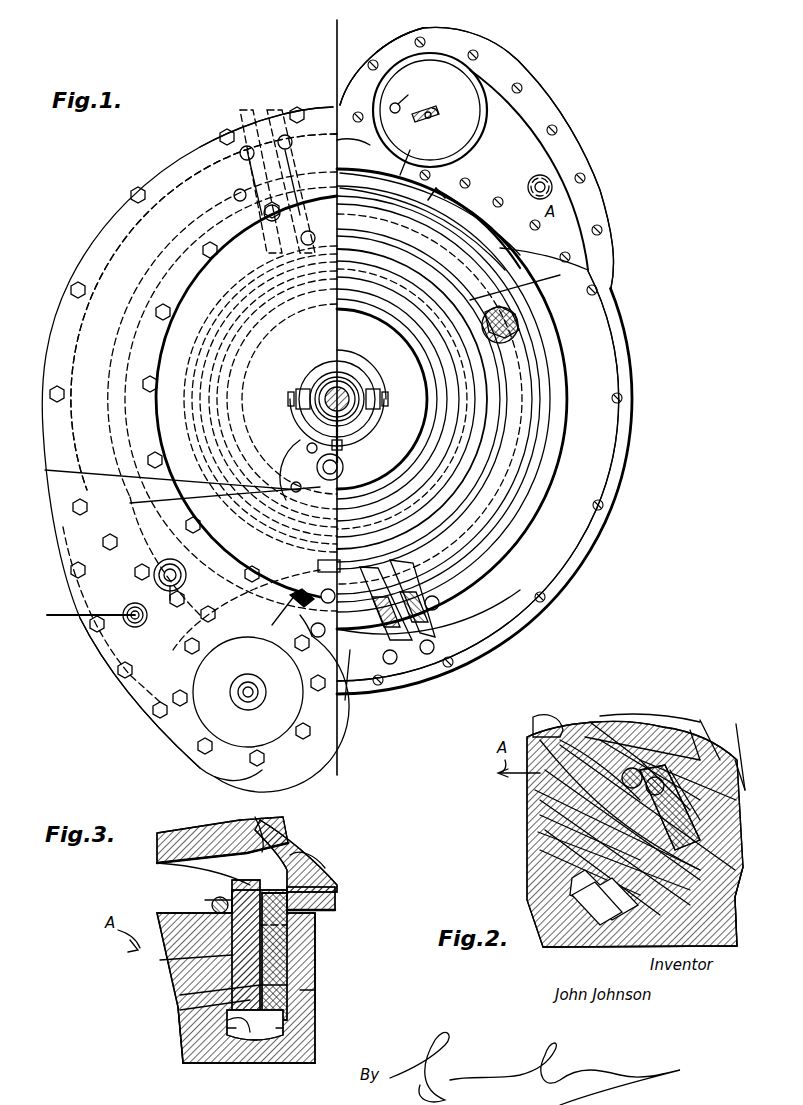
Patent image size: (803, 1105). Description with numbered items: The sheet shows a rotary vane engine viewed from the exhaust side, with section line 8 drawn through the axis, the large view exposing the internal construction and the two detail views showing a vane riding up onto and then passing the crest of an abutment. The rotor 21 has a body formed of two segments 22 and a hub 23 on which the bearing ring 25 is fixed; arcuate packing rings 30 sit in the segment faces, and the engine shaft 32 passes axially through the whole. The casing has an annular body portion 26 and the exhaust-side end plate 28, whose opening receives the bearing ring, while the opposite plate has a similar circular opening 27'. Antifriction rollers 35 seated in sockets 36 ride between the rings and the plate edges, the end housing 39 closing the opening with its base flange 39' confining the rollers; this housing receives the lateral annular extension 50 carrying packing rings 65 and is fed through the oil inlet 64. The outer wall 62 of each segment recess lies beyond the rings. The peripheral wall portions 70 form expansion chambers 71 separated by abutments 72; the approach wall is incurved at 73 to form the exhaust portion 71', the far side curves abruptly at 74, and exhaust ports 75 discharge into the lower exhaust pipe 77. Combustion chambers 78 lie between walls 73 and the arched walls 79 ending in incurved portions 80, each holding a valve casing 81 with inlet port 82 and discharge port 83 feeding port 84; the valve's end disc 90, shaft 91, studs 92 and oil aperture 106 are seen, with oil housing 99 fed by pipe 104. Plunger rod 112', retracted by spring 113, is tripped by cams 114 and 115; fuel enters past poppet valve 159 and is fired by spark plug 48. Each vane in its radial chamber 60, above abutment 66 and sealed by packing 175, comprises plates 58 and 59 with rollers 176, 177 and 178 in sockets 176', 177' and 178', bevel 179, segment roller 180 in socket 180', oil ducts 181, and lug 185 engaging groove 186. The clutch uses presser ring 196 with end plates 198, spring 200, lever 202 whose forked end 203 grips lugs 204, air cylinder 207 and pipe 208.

In FIG. 1, the section line 8 is at (334, 30).
In FIG. 1, the rotor 21 is at (572, 392).
In FIG. 1, the body segment 22 is at (566, 503).
In FIG. 2, the body segment 22 is at (528, 787).
In FIG. 3, the body segment 22 is at (315, 942).
In FIG. 1, the hub 23 is at (345, 312).
In FIG. 3, the hub 23 is at (180, 1060).
In FIG. 1, the bearing ring 25 is at (486, 412).
In FIG. 1, the annular body portion 26 is at (642, 449).
In FIG. 1, the circular opening 27' is at (510, 476).
In FIG. 1, the end plate 28 is at (88, 262).
In FIG. 1, the arcuate packing ring 30 is at (520, 462).
In FIG. 1, the engine shaft 32 is at (330, 385).
In FIG. 1, the antifriction roller 35 is at (518, 330).
In FIG. 1, the socket 36 is at (150, 400).
In FIG. 1, the end housing 39 is at (209, 396).
In FIG. 1, the base flange 39' is at (212, 399).
In FIG. 1, the spark plug 48 is at (125, 625).
In FIG. 1, the lateral annular extension 50 is at (505, 440).
In FIG. 1, the forward vane plate 58 is at (420, 660).
In FIG. 2, the forward vane plate 58 is at (600, 858).
In FIG. 3, the forward vane plate 58 is at (232, 965).
In FIG. 1, the follower vane plate 59 is at (355, 699).
In FIG. 2, the follower vane plate 59 is at (724, 927).
In FIG. 3, the follower vane plate 59 is at (310, 960).
In FIG. 2, the radial chamber 60 is at (588, 900).
In FIG. 3, the radial chamber 60 is at (250, 1040).
In FIG. 1, the outer wall of recess 62 is at (540, 520).
In FIG. 1, the oil inlet 64 is at (328, 605).
In FIG. 1, the packing ring 65 is at (450, 402).
In FIG. 2, the abutment 66 is at (570, 890).
In FIG. 3, the abutment 66 is at (227, 1032).
In FIG. 1, the peripheral wall portion 70 is at (606, 478).
In FIG. 2, the peripheral wall portion 70 is at (737, 756).
In FIG. 3, the peripheral wall portion 70 is at (195, 828).
In FIG. 1, the expansion chamber 71 is at (204, 312).
In FIG. 3, the expansion chamber 71 is at (187, 872).
In FIG. 1, the exhaust portion 71' is at (431, 219).
In FIG. 2, the exhaust portion 71' is at (744, 766).
In FIG. 1, the abutment 72 is at (240, 655).
In FIG. 2, the abutment 72 is at (600, 725).
In FIG. 3, the abutment 72 is at (336, 892).
In FIG. 1, the incurved wall portion 73 is at (63, 527).
In FIG. 2, the incurved wall portion 73 is at (732, 882).
In FIG. 1, the abruptly curved wall portion 74 is at (355, 148).
In FIG. 3, the abruptly curved wall portion 74 is at (255, 828).
In FIG. 1, the exhaust port 75 is at (166, 590).
In FIG. 1, the exhaust pipe 77 is at (166, 578).
In FIG. 1, the combustion chamber 78 is at (513, 130).
In FIG. 2, the combustion chamber 78 is at (690, 750).
In FIG. 1, the outwardly arched wall portion 79 is at (568, 147).
In FIG. 1, the incurved portion 80 is at (395, 40).
In FIG. 1, the valve casing 81 is at (490, 112).
In FIG. 2, the valve casing 81 is at (612, 716).
In FIG. 2, the inlet port 82 is at (692, 735).
In FIG. 2, the discharge port 83 is at (585, 735).
In FIG. 2, the port 84 is at (540, 722).
In FIG. 3, the port 84 is at (292, 855).
In FIG. 1, the end disc 90 is at (460, 82).
In FIG. 1, the valve shaft 91 is at (440, 113).
In FIG. 1, the stud 92 is at (430, 118).
In FIG. 1, the oil housing 99 is at (205, 735).
In FIG. 1, the oil pipe 104 is at (248, 705).
In FIG. 1, the aperture 106 is at (411, 90).
In FIG. 1, the plunger rod 112' is at (267, 633).
In FIG. 1, the spring 113 is at (300, 610).
In FIG. 1, the cam 114 is at (560, 275).
In FIG. 1, the cam 115 is at (156, 478).
In FIG. 1, the poppet valve 159 is at (552, 180).
In FIG. 1, the flat spring packing member 175 is at (485, 195).
In FIG. 2, the flat spring packing member 175 is at (650, 745).
In FIG. 1, the antifriction roller 176 is at (381, 375).
In FIG. 2, the antifriction roller 176 is at (670, 789).
In FIG. 3, the antifriction roller 176 is at (232, 934).
In FIG. 3, the socket 176' is at (212, 889).
In FIG. 1, the antifriction roller 177 is at (333, 405).
In FIG. 2, the antifriction roller 177 is at (698, 780).
In FIG. 3, the antifriction roller 177 is at (307, 938).
In FIG. 3, the socket 177' is at (322, 907).
In FIG. 2, the roller 178 is at (640, 956).
In FIG. 3, the roller 178 is at (249, 1078).
In FIG. 3, the socket 178' is at (331, 998).
In FIG. 2, the beveled end 179 is at (700, 745).
In FIG. 3, the beveled end 179 is at (309, 853).
In FIG. 1, the roller 180 is at (348, 397).
In FIG. 2, the roller 180 is at (625, 741).
In FIG. 3, the roller 180 is at (170, 895).
In FIG. 3, the socket 180' is at (171, 903).
In FIG. 1, the oil duct 181 is at (375, 625).
In FIG. 2, the oil duct 181 is at (540, 803).
In FIG. 3, the oil duct 181 is at (300, 925).
In FIG. 2, the lug 185 is at (580, 875).
In FIG. 3, the lug 185 is at (245, 985).
In FIG. 2, the groove 186 is at (570, 840).
In FIG. 3, the groove 186 is at (250, 1003).
In FIG. 1, the presser ring 196 is at (352, 365).
In FIG. 1, the end plate 198 is at (295, 402).
In FIG. 1, the compression spring 200 is at (365, 372).
In FIG. 1, the lever 202 is at (344, 448).
In FIG. 1, the forked end 203 is at (360, 430).
In FIG. 1, the lug 204 is at (310, 385).
In FIG. 1, the air cylinder 207 is at (209, 499).
In FIG. 1, the pipe 208 is at (318, 462).